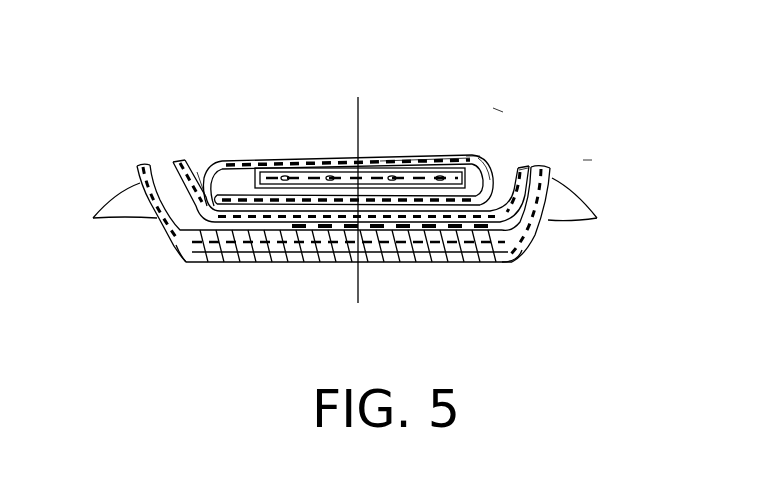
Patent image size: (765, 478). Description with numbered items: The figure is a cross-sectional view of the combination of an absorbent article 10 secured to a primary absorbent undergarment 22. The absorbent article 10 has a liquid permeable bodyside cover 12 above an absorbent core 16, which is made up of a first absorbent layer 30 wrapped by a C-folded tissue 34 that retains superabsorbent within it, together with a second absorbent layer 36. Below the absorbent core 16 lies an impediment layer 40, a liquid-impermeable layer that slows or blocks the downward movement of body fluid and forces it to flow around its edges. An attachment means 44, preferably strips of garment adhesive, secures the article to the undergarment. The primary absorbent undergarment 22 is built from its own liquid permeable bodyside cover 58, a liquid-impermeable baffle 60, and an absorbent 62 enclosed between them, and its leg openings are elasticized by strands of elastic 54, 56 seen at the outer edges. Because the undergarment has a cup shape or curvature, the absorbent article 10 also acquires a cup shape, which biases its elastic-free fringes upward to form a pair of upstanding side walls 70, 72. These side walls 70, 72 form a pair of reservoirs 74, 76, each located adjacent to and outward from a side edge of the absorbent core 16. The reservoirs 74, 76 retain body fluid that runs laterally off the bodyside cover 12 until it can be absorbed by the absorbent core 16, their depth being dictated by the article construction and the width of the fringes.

The absorbent article 10 is at (505, 98).
The bodyside cover 12 is at (372, 158).
The absorbent core 16 is at (473, 145).
The primary absorbent undergarment 22 is at (596, 155).
The first absorbent layer 30 is at (297, 176).
The tissue 34 is at (427, 158).
The second absorbent layer 36 is at (480, 262).
The impediment layer 40 is at (437, 230).
The attachment means 44 is at (333, 258).
The strands of elastic 54 is at (113, 213).
The strands of elastic 56 is at (576, 214).
The bodyside cover 58 is at (158, 240).
The baffle 60 is at (253, 258).
The absorbent 62 is at (204, 247).
The upstanding side wall 70 is at (180, 158).
The upstanding side wall 72 is at (521, 166).
The reservoir 74 is at (207, 158).
The reservoir 76 is at (500, 157).